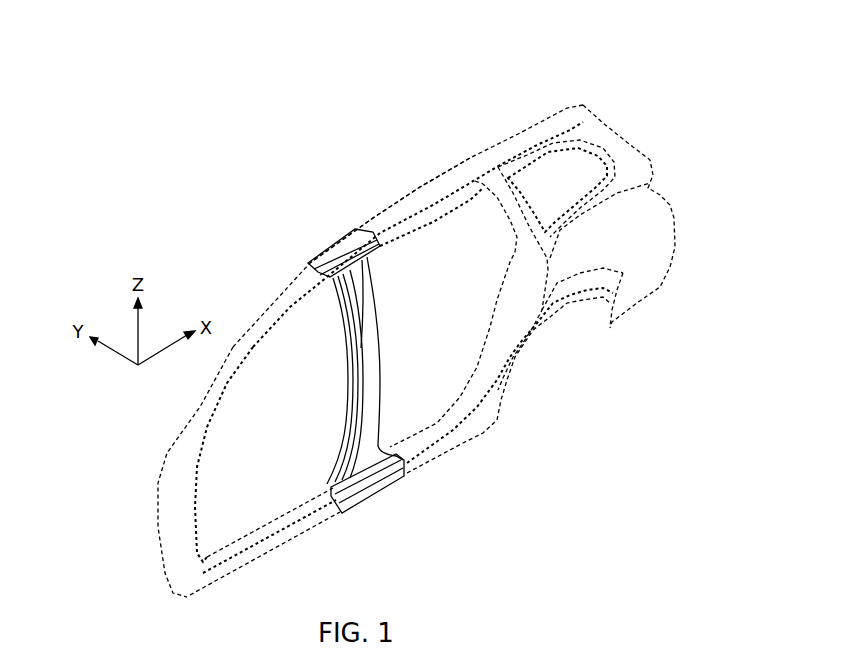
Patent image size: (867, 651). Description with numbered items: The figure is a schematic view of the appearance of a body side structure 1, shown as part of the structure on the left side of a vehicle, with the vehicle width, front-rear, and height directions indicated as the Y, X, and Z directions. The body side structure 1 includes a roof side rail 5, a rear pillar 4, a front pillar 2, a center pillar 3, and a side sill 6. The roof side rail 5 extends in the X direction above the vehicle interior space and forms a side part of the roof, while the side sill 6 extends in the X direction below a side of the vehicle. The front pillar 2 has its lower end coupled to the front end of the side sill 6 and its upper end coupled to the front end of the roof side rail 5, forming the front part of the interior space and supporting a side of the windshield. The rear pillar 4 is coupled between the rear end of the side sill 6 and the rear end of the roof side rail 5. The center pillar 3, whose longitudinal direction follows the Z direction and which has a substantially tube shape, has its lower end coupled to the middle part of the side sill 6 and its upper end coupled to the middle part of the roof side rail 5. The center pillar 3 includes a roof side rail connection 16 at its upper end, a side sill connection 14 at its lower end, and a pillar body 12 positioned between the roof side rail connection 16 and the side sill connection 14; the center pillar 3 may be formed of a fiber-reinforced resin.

The body side structure 1 is at (382, 303).
The front pillar 2 is at (168, 432).
The center pillar 3 is at (380, 370).
The rear pillar 4 is at (497, 296).
The roof side rail 5 is at (424, 183).
The side sill 6 is at (452, 470).
The pillar body 12 is at (376, 370).
The side sill connection 14 is at (373, 492).
The roof side rail connection 16 is at (353, 233).